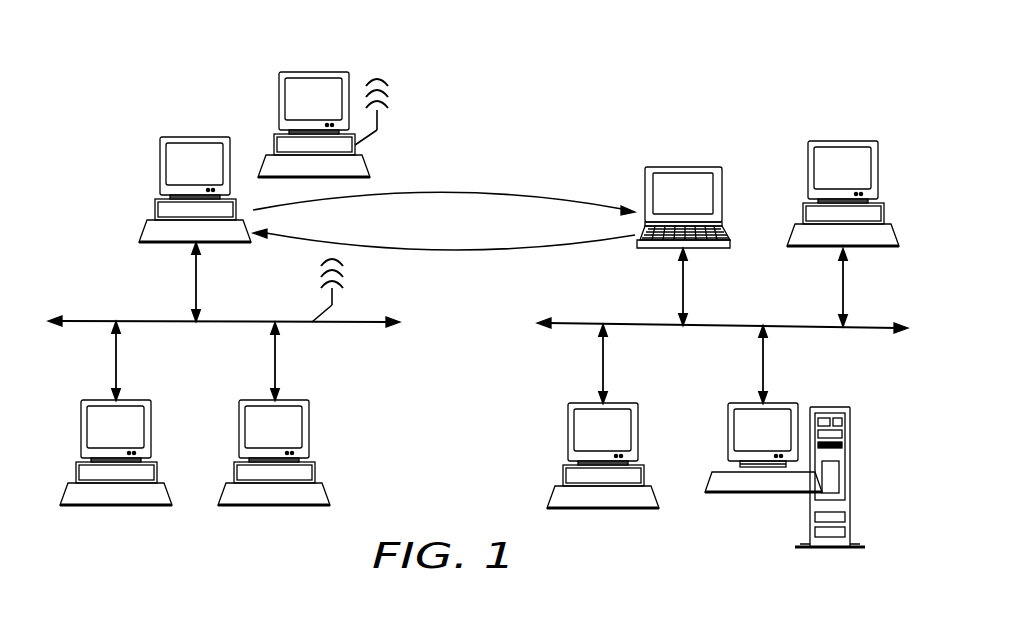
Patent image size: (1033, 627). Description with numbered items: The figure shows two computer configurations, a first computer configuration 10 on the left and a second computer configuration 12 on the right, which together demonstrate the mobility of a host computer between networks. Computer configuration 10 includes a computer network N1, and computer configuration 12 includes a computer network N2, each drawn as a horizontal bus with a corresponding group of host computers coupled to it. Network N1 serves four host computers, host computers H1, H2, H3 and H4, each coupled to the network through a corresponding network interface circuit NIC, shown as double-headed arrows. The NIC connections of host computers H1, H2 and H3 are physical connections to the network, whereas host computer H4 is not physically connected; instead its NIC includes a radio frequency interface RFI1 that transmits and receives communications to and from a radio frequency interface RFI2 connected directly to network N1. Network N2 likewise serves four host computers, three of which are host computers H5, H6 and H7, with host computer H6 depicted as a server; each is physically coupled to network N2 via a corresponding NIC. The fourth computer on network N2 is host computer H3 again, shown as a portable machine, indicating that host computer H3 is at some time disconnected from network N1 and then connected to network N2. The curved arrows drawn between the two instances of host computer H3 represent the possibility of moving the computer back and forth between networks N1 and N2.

The first computer configuration 10 is at (113, 148).
The second computer configuration 12 is at (770, 113).
The computer network N1 is at (88, 320).
The computer network N2 is at (868, 331).
The network interface circuit NIC is at (192, 288).
The radio frequency interface RFI1 is at (384, 118).
The radio frequency interface RFI2 is at (337, 304).
The host computer H1 is at (116, 452).
The host computer H2 is at (274, 452).
The host computer H3 is at (434, 192).
The host computer H4 is at (314, 124).
The host computer H5 is at (603, 455).
The host computer H6 is at (785, 475).
The host computer H7 is at (843, 193).